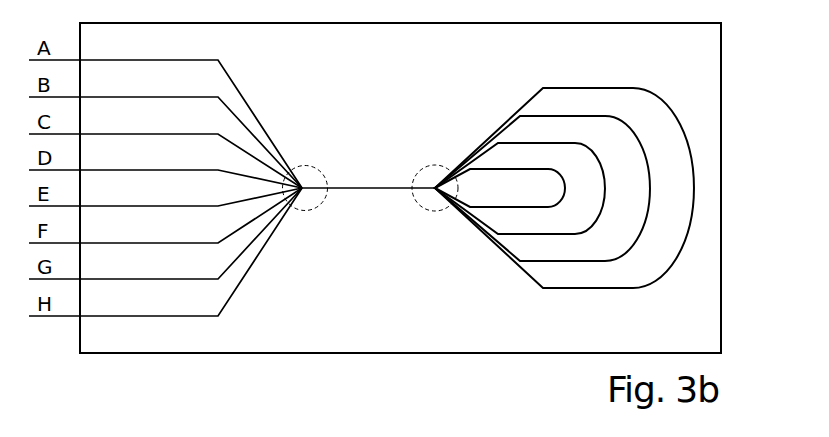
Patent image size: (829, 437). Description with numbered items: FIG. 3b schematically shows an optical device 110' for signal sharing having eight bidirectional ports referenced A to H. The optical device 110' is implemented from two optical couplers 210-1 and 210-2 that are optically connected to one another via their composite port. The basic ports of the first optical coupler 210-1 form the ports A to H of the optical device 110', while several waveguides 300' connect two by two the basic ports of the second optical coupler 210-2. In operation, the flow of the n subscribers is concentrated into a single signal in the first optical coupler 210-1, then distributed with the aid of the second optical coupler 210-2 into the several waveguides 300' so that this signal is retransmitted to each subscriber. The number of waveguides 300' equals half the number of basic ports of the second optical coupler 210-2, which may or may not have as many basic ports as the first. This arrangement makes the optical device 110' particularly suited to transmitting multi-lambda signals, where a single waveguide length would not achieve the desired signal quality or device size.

The optical device for signal sharing 110' is at (445, 188).
The optical coupler 210-1 is at (320, 170).
The optical coupler 210-2 is at (420, 165).
The waveguides 300' is at (618, 188).